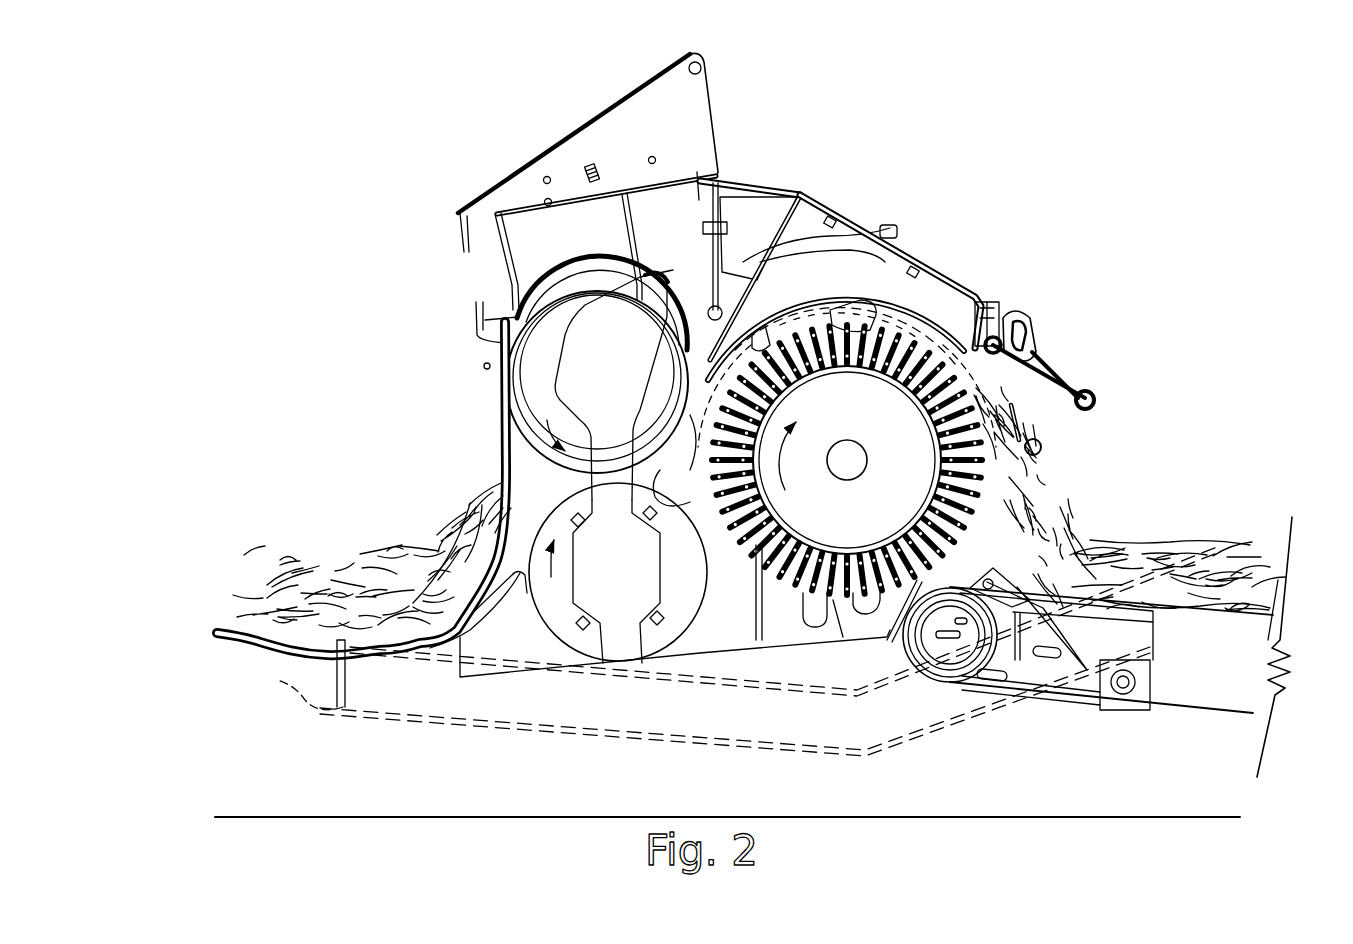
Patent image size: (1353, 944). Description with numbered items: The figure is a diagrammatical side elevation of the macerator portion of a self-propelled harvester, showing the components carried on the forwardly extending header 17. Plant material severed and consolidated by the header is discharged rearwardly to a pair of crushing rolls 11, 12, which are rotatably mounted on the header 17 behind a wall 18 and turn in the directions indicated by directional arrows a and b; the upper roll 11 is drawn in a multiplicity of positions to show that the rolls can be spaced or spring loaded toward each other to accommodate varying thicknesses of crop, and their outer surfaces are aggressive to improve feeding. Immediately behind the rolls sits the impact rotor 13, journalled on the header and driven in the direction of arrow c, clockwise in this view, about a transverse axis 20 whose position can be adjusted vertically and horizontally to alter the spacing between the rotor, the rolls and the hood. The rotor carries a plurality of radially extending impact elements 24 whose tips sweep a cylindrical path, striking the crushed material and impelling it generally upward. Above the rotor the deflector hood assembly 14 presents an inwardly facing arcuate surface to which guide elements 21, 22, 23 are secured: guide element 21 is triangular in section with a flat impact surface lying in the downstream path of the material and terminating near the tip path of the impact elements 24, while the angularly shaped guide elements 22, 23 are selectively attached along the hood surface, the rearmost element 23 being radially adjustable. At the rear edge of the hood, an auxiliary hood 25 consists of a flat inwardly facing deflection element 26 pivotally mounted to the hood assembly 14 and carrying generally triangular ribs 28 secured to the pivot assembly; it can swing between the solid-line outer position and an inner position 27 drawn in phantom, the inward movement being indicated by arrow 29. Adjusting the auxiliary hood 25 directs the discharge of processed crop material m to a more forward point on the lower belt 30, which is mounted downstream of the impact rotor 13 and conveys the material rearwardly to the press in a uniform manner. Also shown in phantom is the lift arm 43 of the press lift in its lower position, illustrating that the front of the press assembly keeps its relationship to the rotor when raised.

The crushing roll 11 is at (503, 347).
The crushing roll 12 is at (553, 634).
The impact rotor 13 is at (803, 558).
The deflector hood assembly 14 is at (935, 268).
The header 17 is at (588, 120).
The wall 18 is at (498, 455).
The transverse axis 20 is at (852, 461).
The guide element 21 is at (729, 285).
The guide element 22 is at (877, 300).
The guide element 23 is at (960, 305).
The impact elements 24 is at (736, 565).
The auxiliary hood 25 is at (1095, 372).
The deflection element 26 is at (1087, 375).
The inner position 27 is at (1046, 446).
The triangular ribs 28 is at (1037, 352).
The arrow 29 is at (1025, 424).
The lower belt 30 is at (1228, 620).
The lift arm 43 is at (632, 740).
The crop material m is at (1252, 545).
The directional arrow a is at (551, 577).
The directional arrow b is at (547, 420).
The arrow c is at (782, 466).